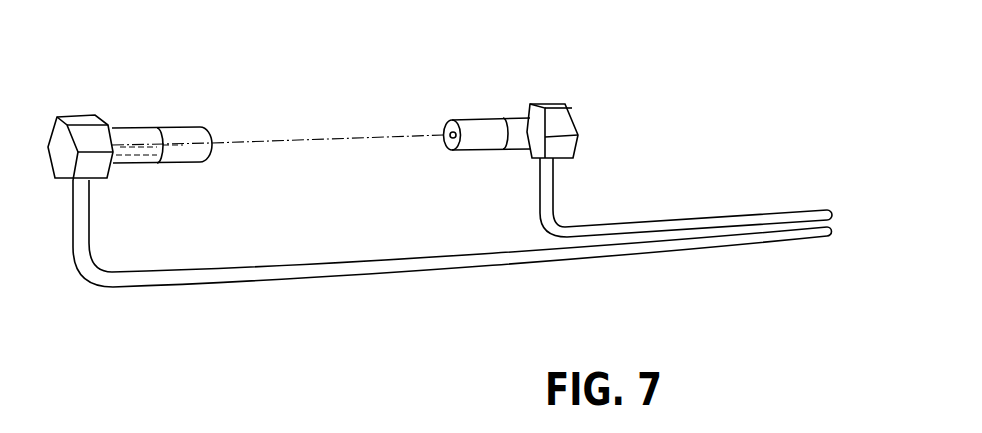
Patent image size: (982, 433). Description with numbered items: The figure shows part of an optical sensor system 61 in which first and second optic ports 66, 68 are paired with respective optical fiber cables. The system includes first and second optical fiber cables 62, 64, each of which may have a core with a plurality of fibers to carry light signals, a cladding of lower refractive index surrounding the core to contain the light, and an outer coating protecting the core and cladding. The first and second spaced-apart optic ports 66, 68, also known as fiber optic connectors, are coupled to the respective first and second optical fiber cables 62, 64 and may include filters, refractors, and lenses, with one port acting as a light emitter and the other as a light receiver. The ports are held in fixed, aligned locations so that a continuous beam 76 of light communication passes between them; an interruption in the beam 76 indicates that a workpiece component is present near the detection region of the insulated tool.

The optical sensor system 61 is at (452, 194).
The first optical fiber cable 62 is at (760, 216).
The second optical fiber cable 64 is at (739, 242).
The first optic port 66 is at (584, 105).
The second optic port 68 is at (116, 113).
The beam of light communication 76 is at (327, 138).